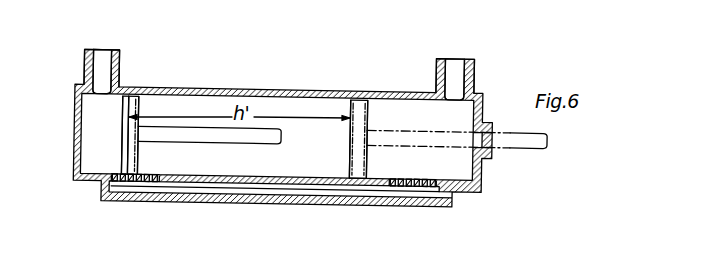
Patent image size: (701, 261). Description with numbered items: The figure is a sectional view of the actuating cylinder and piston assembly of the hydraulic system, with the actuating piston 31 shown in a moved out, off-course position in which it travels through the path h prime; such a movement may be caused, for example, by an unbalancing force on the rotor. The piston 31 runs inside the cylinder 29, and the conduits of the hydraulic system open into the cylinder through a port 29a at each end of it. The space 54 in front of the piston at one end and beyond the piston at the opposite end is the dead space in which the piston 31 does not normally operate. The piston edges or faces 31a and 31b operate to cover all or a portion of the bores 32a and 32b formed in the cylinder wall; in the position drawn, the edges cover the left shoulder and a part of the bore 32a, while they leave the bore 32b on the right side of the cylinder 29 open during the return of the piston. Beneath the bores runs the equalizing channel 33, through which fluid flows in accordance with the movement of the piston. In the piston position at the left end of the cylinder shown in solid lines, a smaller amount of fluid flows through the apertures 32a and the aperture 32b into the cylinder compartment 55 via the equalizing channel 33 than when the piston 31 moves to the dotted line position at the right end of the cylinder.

The cylinder 29 is at (299, 90).
The port 29a is at (100, 62).
The actuating piston 31 is at (134, 154).
The piston edge 31a is at (123, 113).
The piston edge 31b is at (143, 116).
The cylinder compartment 55 is at (255, 117).
The bore 32a is at (138, 178).
The bore 32b is at (427, 187).
The equalizing channel 33 is at (373, 190).
The dead space 54 is at (108, 147).